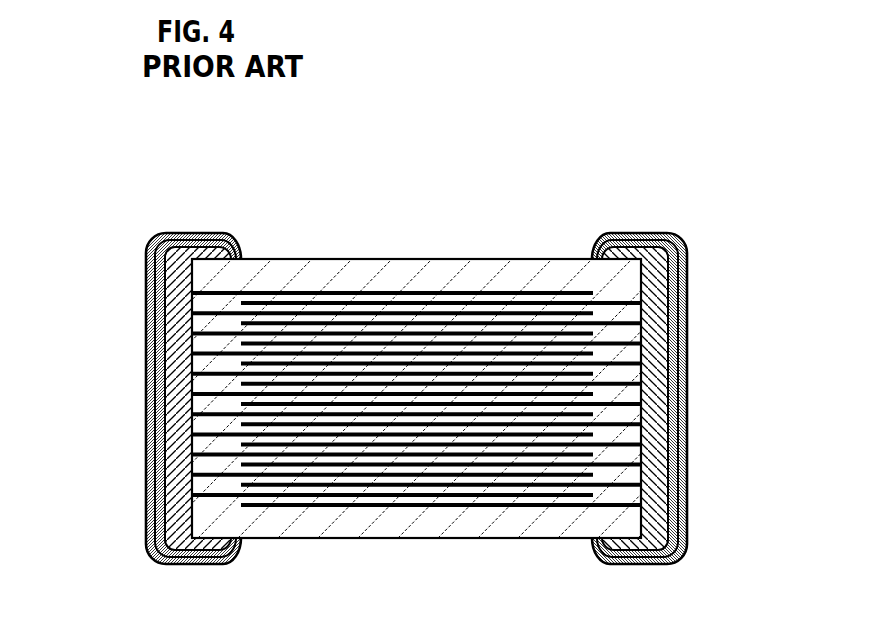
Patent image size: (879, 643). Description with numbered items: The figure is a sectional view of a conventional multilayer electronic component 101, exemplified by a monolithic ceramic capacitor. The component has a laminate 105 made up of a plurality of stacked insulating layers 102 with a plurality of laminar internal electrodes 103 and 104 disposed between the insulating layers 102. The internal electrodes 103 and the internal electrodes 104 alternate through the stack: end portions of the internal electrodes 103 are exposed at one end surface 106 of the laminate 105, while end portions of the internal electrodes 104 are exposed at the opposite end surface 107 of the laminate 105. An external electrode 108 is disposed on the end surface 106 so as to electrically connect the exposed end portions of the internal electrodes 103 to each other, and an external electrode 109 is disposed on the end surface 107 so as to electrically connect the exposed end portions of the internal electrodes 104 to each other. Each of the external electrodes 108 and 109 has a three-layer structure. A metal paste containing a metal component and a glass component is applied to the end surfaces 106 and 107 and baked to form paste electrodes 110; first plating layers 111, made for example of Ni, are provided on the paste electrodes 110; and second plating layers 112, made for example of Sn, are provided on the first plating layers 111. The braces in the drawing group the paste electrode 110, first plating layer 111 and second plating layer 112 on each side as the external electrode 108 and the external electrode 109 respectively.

The multilayer electronic component 101 is at (208, 150).
The insulating layers 102 is at (340, 488).
The internal electrodes 103 is at (335, 311).
The internal electrodes 104 is at (427, 323).
The laminate 105 is at (516, 252).
The end surface 106 is at (126, 398).
The end surface 107 is at (714, 398).
The external electrode 108 is at (193, 383).
The external electrode 109 is at (770, 240).
The paste electrodes 110 is at (660, 257).
The first plating layers 111 is at (673, 285).
The second plating layers 112 is at (683, 315).